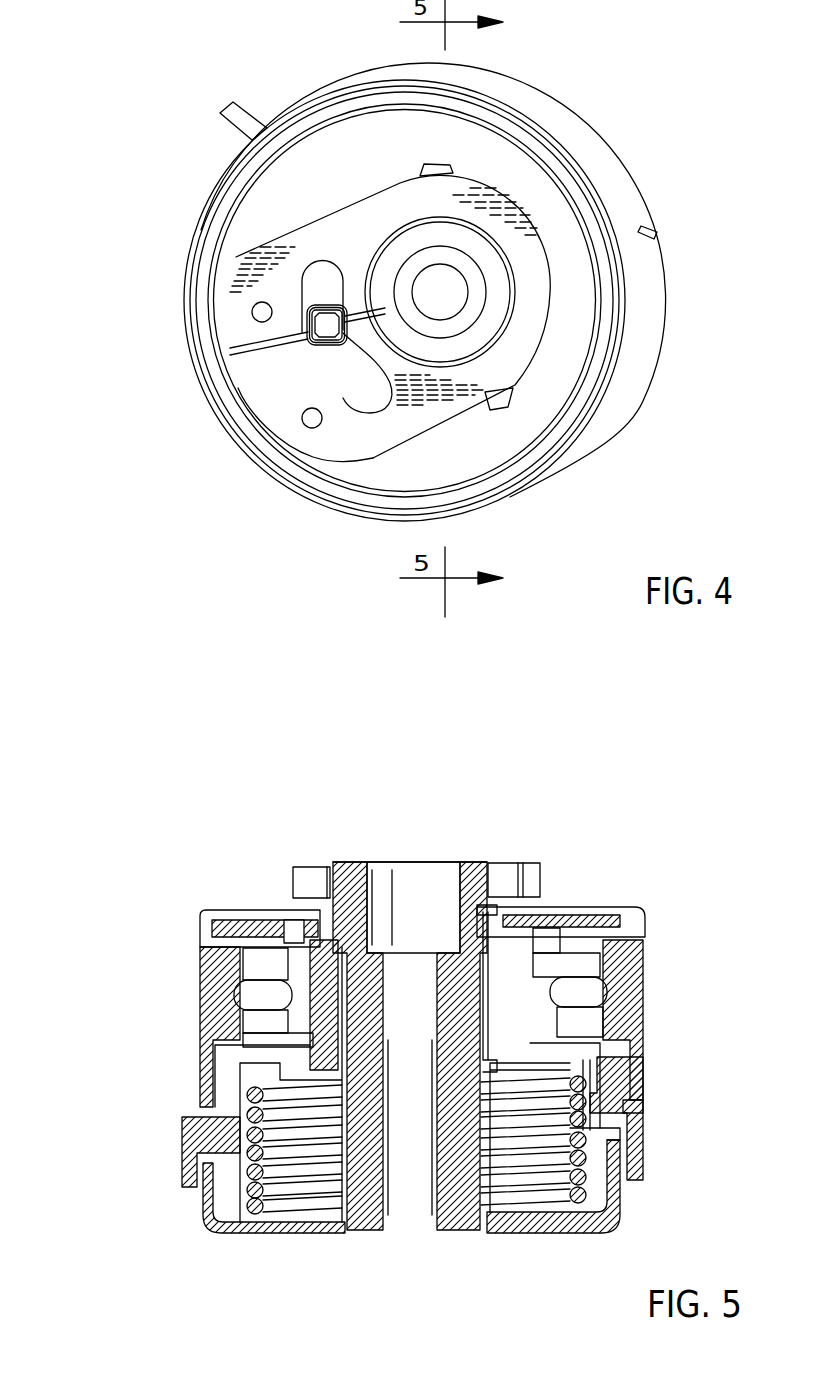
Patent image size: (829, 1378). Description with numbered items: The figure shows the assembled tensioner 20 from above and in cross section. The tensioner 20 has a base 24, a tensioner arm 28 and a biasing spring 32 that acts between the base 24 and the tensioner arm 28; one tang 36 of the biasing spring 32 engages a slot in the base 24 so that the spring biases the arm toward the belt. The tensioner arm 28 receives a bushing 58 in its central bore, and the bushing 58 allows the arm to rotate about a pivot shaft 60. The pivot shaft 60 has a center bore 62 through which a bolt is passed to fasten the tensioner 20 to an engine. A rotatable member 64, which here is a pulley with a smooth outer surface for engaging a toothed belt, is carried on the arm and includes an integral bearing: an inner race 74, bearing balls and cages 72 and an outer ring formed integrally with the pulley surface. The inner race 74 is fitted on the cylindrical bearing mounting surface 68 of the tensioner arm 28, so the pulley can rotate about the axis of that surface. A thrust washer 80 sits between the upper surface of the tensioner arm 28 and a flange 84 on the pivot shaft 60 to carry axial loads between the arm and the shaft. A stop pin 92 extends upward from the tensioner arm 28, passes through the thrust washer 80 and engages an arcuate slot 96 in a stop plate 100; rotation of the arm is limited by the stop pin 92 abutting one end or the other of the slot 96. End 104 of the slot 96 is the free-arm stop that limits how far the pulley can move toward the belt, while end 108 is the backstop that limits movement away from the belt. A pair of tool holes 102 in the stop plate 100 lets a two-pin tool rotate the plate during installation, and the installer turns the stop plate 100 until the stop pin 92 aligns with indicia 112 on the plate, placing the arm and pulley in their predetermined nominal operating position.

In FIG. 4, the tensioner 20 is at (170, 231).
In FIG. 5, the tensioner 20 is at (140, 1063).
In FIG. 4, the base 24 is at (647, 288).
In FIG. 5, the base 24 is at (205, 1203).
In FIG. 5, the tensioner arm 28 is at (192, 1137).
In FIG. 5, the biasing spring 32 is at (540, 1143).
In FIG. 4, the tang 36 is at (233, 117).
In FIG. 5, the bushing 58 is at (375, 927).
In FIG. 4, the pivot shaft 60 is at (476, 322).
In FIG. 5, the pivot shaft 60 is at (447, 986).
In FIG. 5, the center bore 62 is at (419, 1032).
In FIG. 4, the rotatable member 64 is at (603, 200).
In FIG. 5, the rotatable member 64 is at (630, 982).
In FIG. 5, the bearing mounting surface 68 is at (300, 937).
In FIG. 5, the bearing balls and cages 72 is at (247, 1002).
In FIG. 5, the inner race 74 is at (217, 983).
In FIG. 5, the thrust washer 80 is at (580, 917).
In FIG. 5, the flange 84 is at (500, 903).
In FIG. 4, the stop pin 92 is at (312, 343).
In FIG. 4, the arcuate slot 96 is at (363, 393).
In FIG. 4, the stop plate 100 is at (363, 220).
In FIG. 5, the stop plate 100 is at (308, 868).
In FIG. 4, the tool holes 102 is at (252, 312).
In FIG. 4, the end 104 is at (372, 425).
In FIG. 4, the end 108 is at (310, 263).
In FIG. 4, the indicia 112 is at (240, 347).